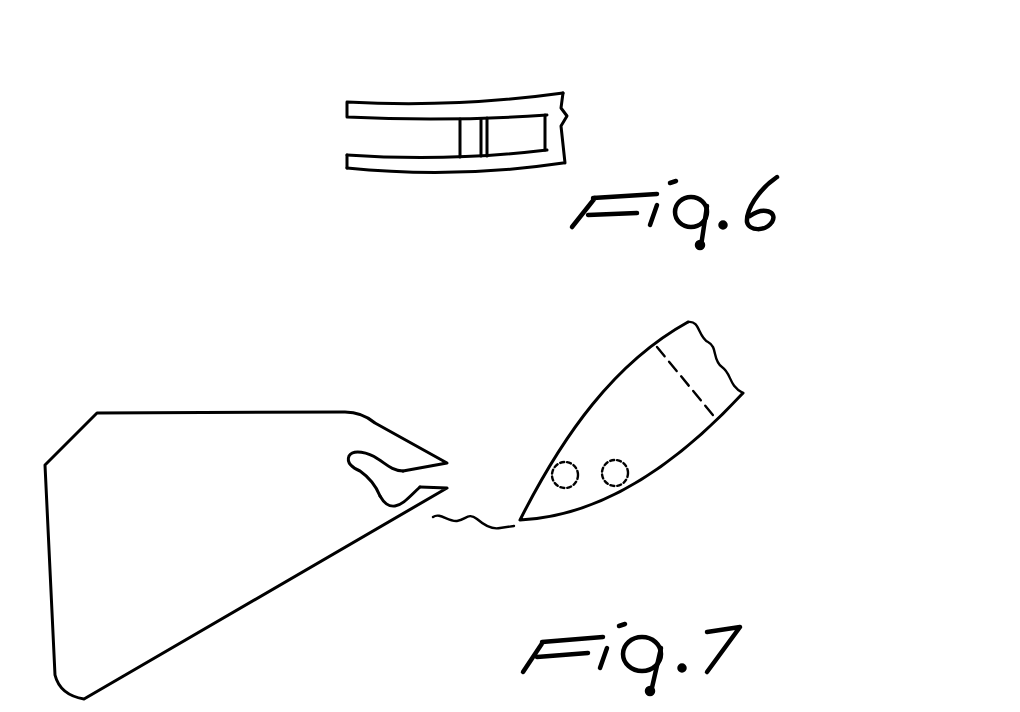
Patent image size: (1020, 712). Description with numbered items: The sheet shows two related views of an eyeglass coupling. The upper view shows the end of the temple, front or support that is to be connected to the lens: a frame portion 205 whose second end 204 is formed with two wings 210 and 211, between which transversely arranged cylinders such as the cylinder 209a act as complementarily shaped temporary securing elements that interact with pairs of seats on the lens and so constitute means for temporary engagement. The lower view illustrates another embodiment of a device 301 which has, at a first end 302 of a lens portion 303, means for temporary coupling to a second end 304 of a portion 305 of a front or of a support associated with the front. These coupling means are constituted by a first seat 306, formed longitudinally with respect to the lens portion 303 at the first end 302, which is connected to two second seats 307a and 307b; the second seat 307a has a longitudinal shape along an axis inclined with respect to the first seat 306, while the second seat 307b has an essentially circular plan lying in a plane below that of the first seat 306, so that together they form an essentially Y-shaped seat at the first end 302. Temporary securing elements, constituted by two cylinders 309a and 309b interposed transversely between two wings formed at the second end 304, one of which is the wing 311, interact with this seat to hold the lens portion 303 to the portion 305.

In FIG. 6, the second end 204 is at (380, 188).
In FIG. 6, the frame portion 205 is at (555, 135).
In FIG. 6, the cylinder 209a is at (477, 128).
In FIG. 6, the wing 210 is at (380, 105).
In FIG. 6, the wing 211 is at (350, 170).
In FIG. 7, the device 301 is at (279, 480).
In FIG. 7, the first end 302 is at (402, 546).
In FIG. 7, the lens portion 303 is at (142, 442).
In FIG. 7, the second end 304 is at (680, 421).
In FIG. 7, the portion 305 is at (733, 393).
In FIG. 7, the first seat 306 is at (428, 478).
In FIG. 7, the second seat 307a is at (350, 455).
In FIG. 7, the second seat 307b is at (385, 503).
In FIG. 7, the cylinder 309a is at (552, 467).
In FIG. 7, the cylinder 309b is at (617, 478).
In FIG. 7, the wing 311 is at (673, 428).